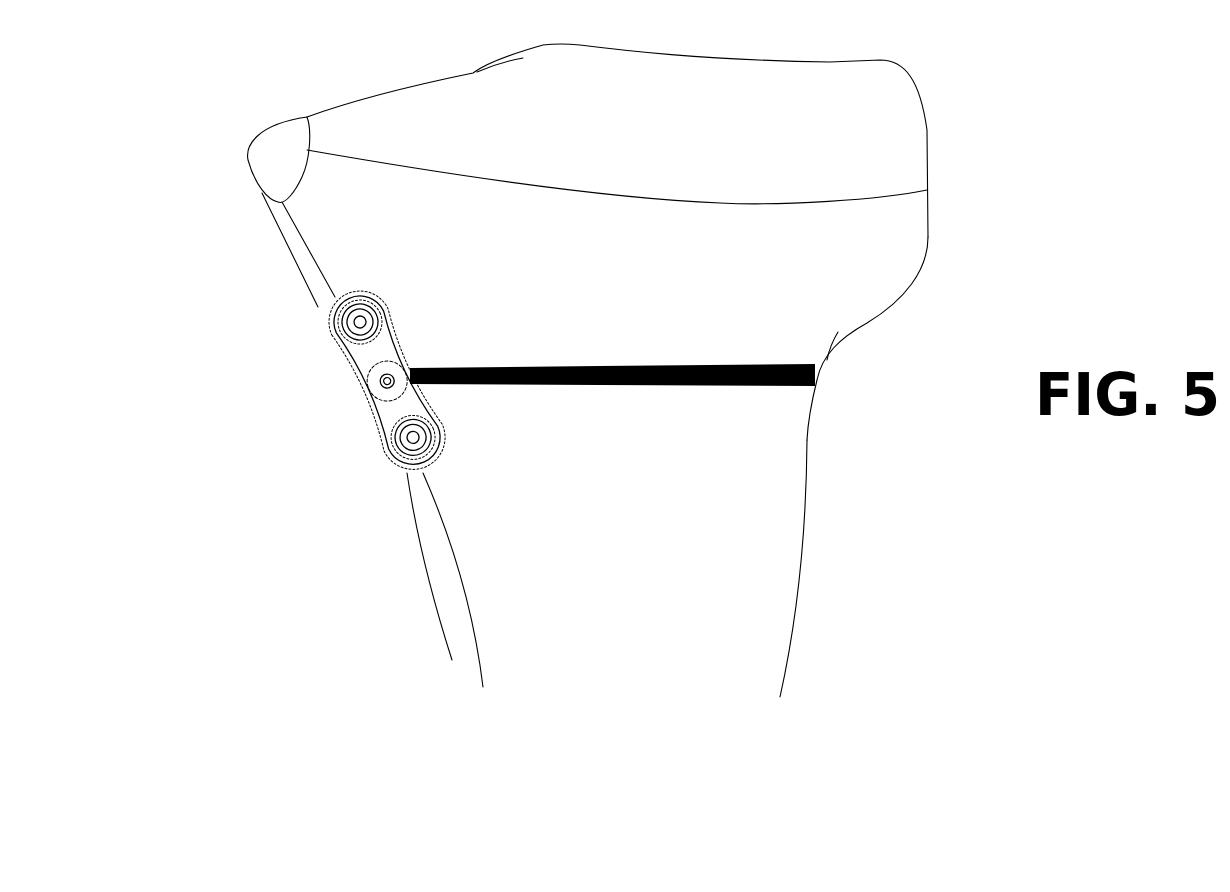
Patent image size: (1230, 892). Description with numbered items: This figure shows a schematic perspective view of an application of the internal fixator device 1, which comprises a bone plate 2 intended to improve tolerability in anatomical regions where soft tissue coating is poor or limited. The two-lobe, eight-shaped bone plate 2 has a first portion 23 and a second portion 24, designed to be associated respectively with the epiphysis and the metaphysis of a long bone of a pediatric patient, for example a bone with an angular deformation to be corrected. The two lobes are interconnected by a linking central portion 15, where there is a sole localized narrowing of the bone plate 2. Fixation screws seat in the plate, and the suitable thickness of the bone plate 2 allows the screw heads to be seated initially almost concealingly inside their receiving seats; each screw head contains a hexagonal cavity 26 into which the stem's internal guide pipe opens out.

The internal fixator device 1 is at (329, 464).
The bone plate 2 is at (400, 327).
The linking central portion 15 is at (368, 377).
The first portion 23 is at (432, 460).
The second portion 24 is at (343, 297).
The hexagonal cavity 26 is at (403, 440).